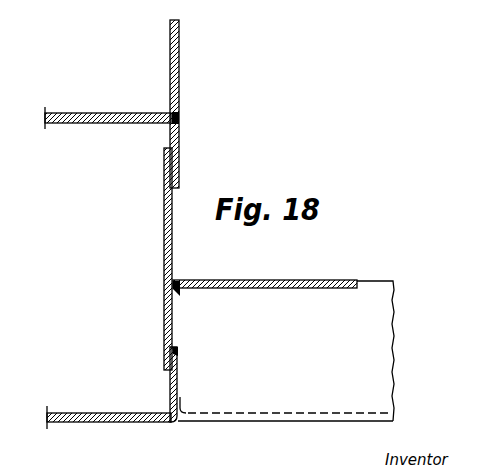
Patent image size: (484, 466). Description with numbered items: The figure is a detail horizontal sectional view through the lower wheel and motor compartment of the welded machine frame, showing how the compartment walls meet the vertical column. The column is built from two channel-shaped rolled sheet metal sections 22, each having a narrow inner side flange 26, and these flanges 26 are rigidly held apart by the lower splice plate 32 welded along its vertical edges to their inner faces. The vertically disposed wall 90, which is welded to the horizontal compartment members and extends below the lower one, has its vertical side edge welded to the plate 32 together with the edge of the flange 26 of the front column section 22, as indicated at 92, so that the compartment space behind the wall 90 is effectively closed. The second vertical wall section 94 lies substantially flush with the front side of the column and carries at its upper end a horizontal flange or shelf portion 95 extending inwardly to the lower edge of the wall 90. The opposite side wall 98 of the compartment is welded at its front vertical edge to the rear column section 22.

The side wall 98 is at (180, 52).
The column section 22 is at (103, 114).
The inner side flange 26 is at (179, 146).
The lower splice plate 32 is at (163, 273).
The vertical wall 90 is at (293, 281).
The weld 92 is at (181, 292).
The horizontal flange or shelf portion 95 is at (378, 364).
The second vertical wall section 94 is at (280, 423).